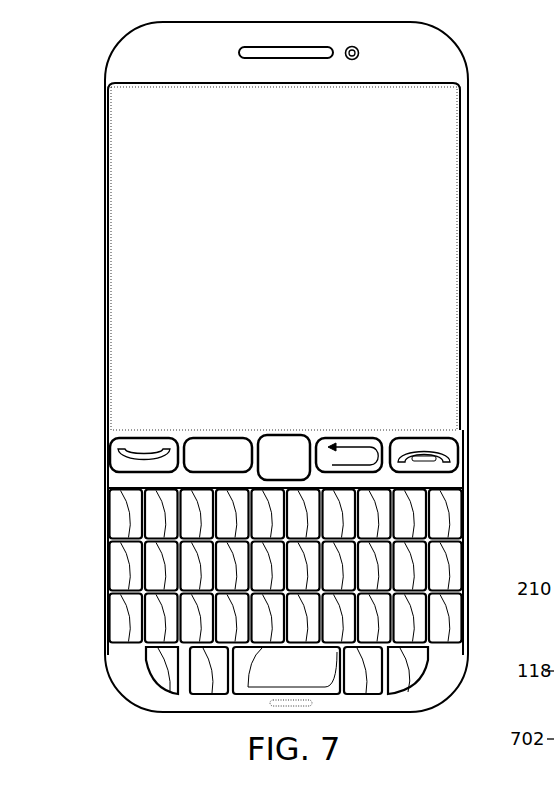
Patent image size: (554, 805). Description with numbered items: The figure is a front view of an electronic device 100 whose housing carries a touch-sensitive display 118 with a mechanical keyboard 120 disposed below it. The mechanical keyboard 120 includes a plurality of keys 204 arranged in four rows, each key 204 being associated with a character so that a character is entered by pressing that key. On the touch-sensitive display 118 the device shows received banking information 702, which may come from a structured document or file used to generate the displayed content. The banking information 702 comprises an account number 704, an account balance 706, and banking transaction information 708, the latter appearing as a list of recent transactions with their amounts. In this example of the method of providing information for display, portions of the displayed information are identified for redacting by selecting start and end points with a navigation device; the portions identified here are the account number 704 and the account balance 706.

The electronic device 100 is at (171, 744).
The touch-sensitive display 118 is at (108, 212).
The mechanical keyboard 120 is at (106, 448).
The keys 204 is at (163, 512).
The banking information 702 is at (128, 288).
The account number 704 is at (402, 118).
The account balance 706 is at (220, 144).
The banking transaction information 708 is at (348, 195).